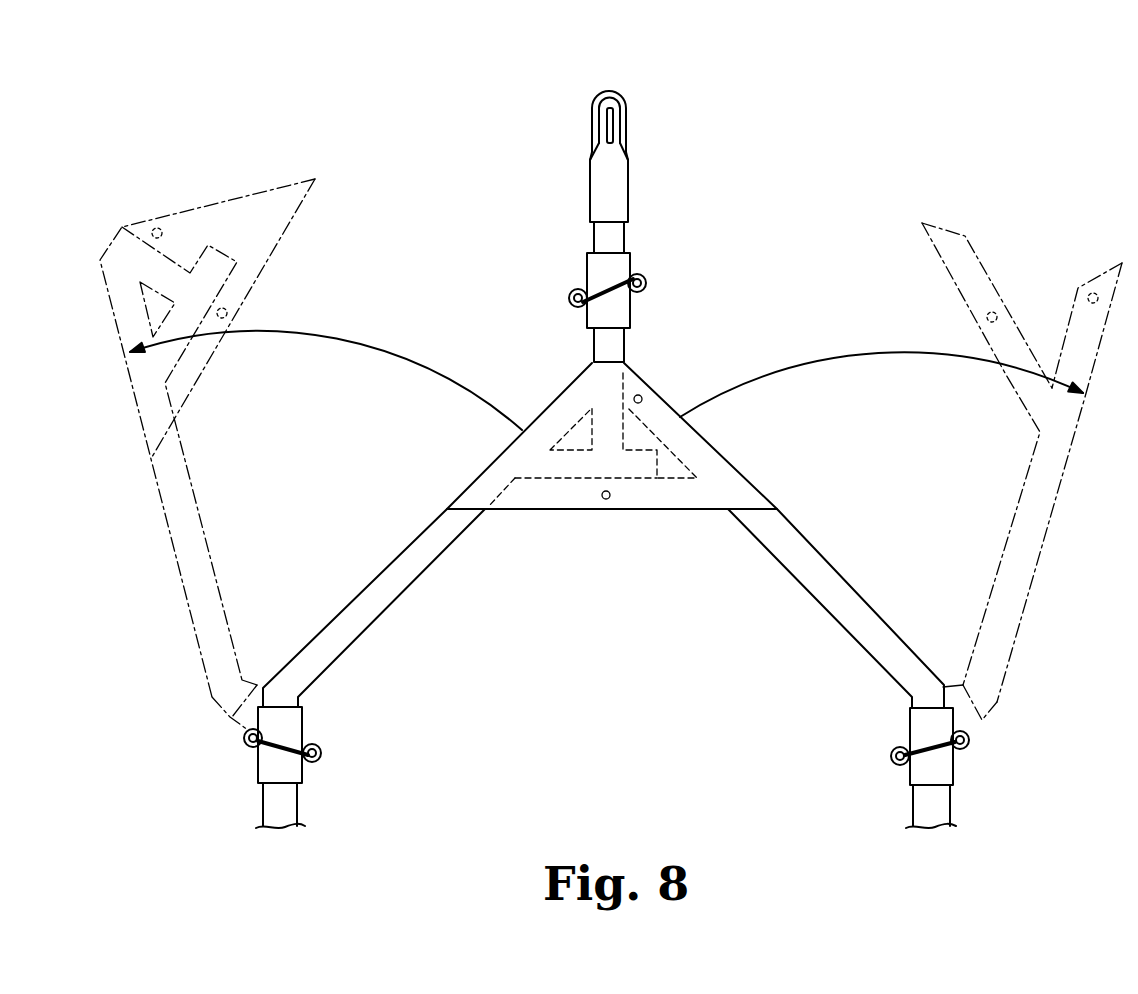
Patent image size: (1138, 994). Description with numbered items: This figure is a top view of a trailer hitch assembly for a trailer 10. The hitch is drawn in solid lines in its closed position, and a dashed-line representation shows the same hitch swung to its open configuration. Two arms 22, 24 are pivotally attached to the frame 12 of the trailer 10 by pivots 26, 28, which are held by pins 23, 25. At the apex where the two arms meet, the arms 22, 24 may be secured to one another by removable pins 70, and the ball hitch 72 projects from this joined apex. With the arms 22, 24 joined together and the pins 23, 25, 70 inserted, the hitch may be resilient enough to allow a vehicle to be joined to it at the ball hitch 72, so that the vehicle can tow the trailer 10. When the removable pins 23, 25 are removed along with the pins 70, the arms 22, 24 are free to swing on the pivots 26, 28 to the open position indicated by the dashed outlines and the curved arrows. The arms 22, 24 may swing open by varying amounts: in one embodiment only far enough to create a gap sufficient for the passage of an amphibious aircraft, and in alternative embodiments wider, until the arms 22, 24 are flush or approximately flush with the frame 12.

The trailer 10 is at (298, 845).
The frame 12 is at (287, 803).
The arm 22 is at (397, 580).
The pin 23 is at (322, 752).
The arm 24 is at (828, 593).
The pin 25 is at (891, 752).
The pivot 26 is at (245, 746).
The pivot 28 is at (969, 748).
The removable pins 70 is at (641, 403).
The ball hitch 72 is at (615, 92).